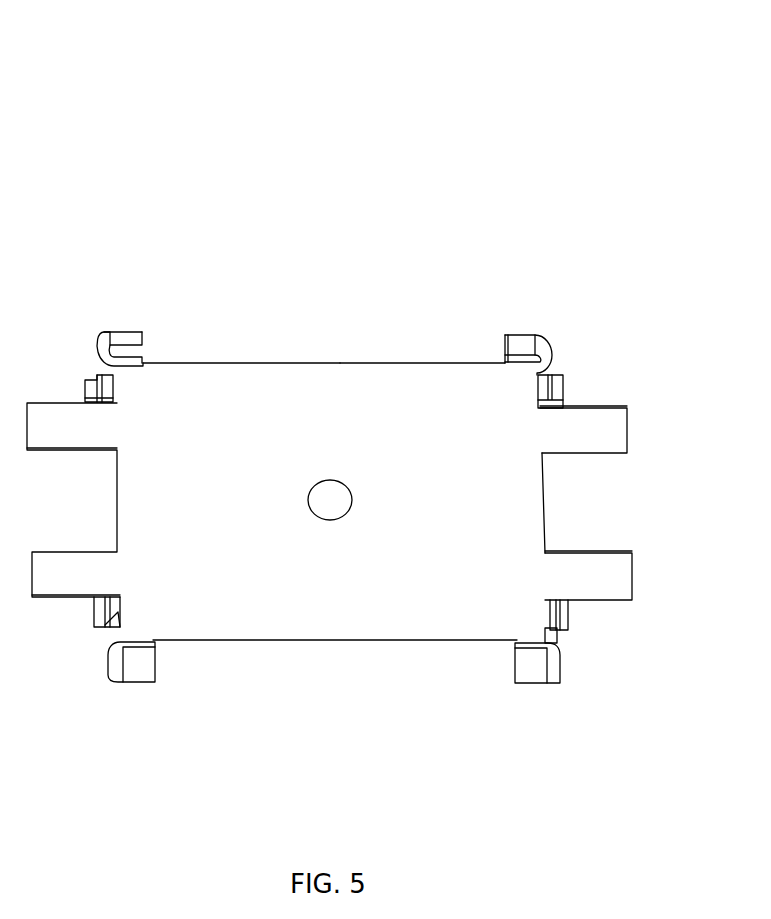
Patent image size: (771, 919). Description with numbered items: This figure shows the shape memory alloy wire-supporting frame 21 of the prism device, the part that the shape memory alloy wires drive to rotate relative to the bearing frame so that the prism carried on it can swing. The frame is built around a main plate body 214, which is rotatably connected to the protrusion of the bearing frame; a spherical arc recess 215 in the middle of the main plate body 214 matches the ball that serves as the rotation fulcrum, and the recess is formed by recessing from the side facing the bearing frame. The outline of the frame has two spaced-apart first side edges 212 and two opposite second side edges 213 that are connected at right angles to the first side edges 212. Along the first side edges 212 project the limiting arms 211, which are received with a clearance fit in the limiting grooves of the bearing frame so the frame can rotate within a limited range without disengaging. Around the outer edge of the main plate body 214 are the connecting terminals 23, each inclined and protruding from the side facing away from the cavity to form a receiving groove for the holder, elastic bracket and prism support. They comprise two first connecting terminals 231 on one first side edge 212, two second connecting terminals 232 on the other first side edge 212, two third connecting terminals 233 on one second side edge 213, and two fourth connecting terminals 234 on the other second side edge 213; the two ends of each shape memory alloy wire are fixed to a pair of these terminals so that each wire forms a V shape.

The shape memory alloy wire-supporting frame 21 is at (290, 65).
The limiting arm 211 is at (610, 430).
The first side edge 212 is at (545, 502).
The second side edge 213 is at (453, 363).
The main plate body 214 is at (228, 390).
The spherical arc recess 215 is at (337, 495).
The connecting terminal 23 is at (535, 663).
The first connecting terminal 231 is at (565, 622).
The second connecting terminal 232 is at (88, 383).
The third connecting terminal 233 is at (138, 670).
The fourth connecting terminal 234 is at (529, 340).